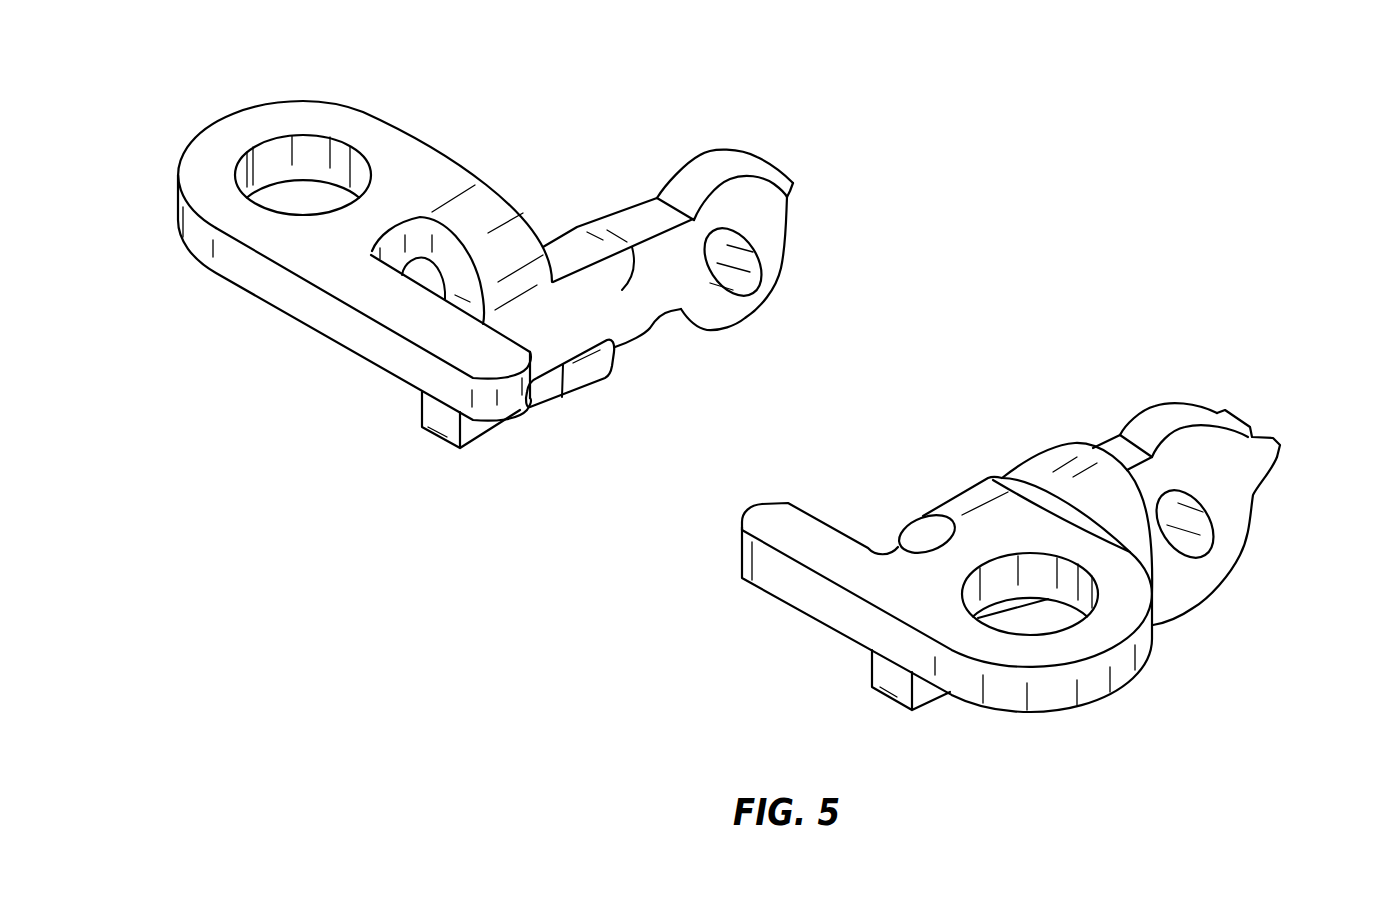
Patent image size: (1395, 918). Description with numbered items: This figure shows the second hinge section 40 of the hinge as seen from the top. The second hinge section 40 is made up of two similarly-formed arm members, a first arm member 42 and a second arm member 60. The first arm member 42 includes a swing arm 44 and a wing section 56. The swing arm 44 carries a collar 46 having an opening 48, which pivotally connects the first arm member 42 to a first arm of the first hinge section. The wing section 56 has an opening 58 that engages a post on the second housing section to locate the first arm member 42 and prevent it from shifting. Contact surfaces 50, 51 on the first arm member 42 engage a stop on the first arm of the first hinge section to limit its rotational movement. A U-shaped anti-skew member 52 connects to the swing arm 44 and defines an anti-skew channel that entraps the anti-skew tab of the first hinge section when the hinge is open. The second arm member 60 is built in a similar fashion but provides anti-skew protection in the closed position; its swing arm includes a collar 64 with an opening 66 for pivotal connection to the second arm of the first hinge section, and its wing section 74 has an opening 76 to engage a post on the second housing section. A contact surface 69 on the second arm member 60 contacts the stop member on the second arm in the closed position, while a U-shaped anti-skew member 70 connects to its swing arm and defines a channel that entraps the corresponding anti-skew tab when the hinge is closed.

The second hinge section 40 is at (512, 537).
The first arm member 42 is at (466, 110).
The swing arm 44 is at (620, 241).
The collar 46 is at (740, 303).
The opening 48 is at (760, 246).
The contact surface 50 is at (638, 338).
The contact surface 51 is at (800, 186).
The U-shaped anti-skew member 52 is at (537, 410).
The wing section 56 is at (180, 157).
The opening 58 is at (276, 133).
The second arm member 60 is at (1180, 355).
The collar 64 is at (1200, 602).
The opening 66 is at (1203, 532).
The contact surface 69 is at (1277, 453).
The U-shaped anti-skew member 70 is at (1072, 462).
The wing section 74 is at (825, 602).
The opening 76 is at (1057, 630).